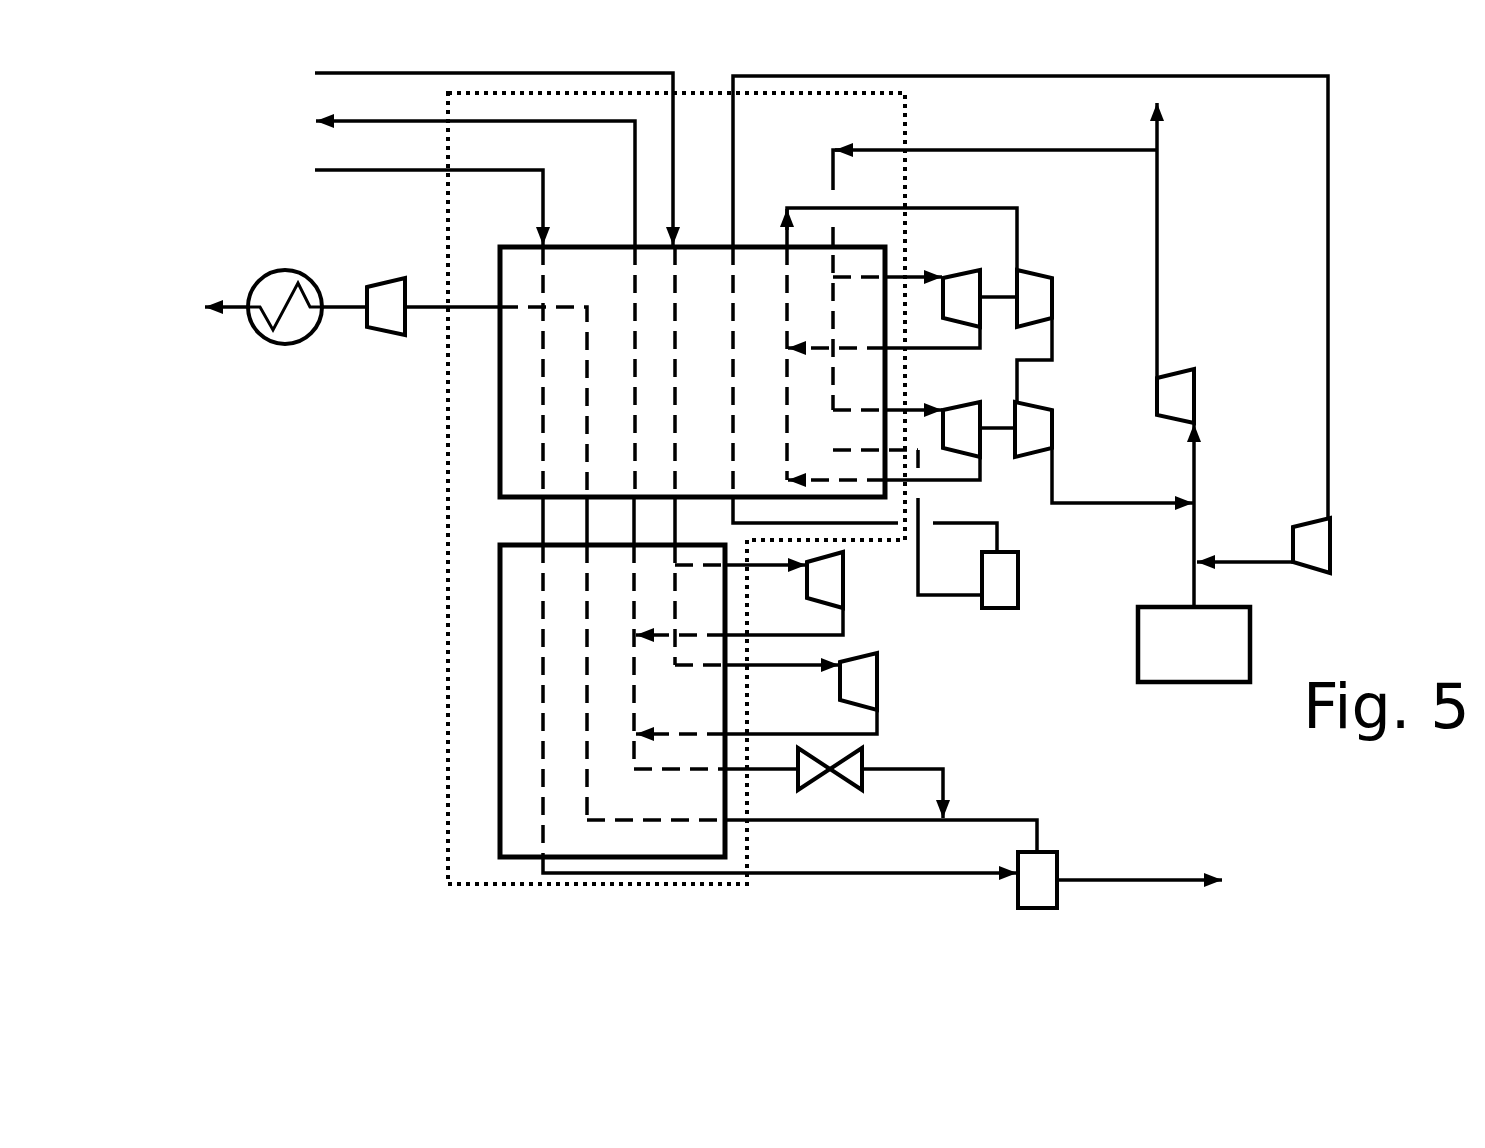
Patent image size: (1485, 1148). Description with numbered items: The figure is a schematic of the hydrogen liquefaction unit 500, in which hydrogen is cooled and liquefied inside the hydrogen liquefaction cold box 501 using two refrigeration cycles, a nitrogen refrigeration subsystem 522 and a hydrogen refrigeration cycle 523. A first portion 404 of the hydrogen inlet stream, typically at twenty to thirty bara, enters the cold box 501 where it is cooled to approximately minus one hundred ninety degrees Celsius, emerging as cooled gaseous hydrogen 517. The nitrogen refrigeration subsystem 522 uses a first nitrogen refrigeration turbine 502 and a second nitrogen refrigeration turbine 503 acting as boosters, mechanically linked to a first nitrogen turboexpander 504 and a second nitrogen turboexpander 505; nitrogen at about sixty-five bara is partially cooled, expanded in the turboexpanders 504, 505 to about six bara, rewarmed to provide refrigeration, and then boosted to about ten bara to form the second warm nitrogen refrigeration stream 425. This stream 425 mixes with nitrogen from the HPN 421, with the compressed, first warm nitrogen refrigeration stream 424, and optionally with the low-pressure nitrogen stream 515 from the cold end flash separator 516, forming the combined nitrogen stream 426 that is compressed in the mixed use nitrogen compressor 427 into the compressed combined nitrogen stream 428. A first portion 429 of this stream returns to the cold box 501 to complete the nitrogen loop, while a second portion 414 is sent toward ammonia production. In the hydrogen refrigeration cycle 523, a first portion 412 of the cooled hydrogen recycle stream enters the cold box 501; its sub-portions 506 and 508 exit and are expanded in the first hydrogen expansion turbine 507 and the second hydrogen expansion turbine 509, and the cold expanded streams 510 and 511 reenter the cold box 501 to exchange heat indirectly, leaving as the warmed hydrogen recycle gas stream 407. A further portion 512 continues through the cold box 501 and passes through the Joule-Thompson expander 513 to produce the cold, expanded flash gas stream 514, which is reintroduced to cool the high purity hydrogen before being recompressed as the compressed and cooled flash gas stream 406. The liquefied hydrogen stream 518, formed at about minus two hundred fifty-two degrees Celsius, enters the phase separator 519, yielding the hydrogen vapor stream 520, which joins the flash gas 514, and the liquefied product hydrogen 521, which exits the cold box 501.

The first portion of hydrogen inlet stream 404 is at (397, 201).
The compressed and cooled flash gas stream 406 is at (320, 307).
The warmed hydrogen recycle gas stream 407 is at (440, 178).
The first portion of cooled hydrogen recycle stream 412 is at (462, 153).
The second portion of compressed combined nitrogen stream 414 is at (1190, 123).
The HPN 421 is at (1194, 644).
The compressed, first warm nitrogen refrigeration stream 424 is at (1263, 545).
The second warm nitrogen refrigeration stream 425 is at (1122, 475).
The combined nitrogen stream 426 is at (1222, 515).
The mixed use nitrogen compressor 427 is at (1205, 396).
The compressed combined nitrogen stream 428 is at (1187, 264).
The first portion of compressed combined nitrogen stream 429 is at (995, 154).
The hydrogen liquefaction unit 500 is at (382, 587).
The hydrogen liquefaction cold box 501 is at (642, 488).
The first nitrogen refrigeration turbine 502 is at (931, 305).
The second nitrogen refrigeration turbine 503 is at (1027, 413).
The first nitrogen turboexpander 504 is at (884, 292).
The second nitrogen turboexpander 505 is at (884, 424).
The first portion of first portion of cooled hydrogen recycle stream 506 is at (740, 581).
The first hydrogen expansion turbine 507 is at (852, 580).
The second portion of first portion of cooled hydrogen recycle stream 508 is at (757, 682).
The second hydrogen expansion turbine 509 is at (888, 681).
The cold expanded first portion of first portion of cooled hydrogen recycle stream 510 is at (739, 621).
The cold expanded second portion of first portion of cooled hydrogen recycle stream 511 is at (756, 722).
The second portion of first portion of cooled hydrogen recycle stream 512 is at (716, 787).
The Joule-Thompson expander 513 is at (830, 782).
The cold, expanded second portion of first portion of cooled hydrogen recycle stream 514 is at (902, 793).
The low-pressure nitrogen stream 515 is at (1063, 299).
The cold end flash separator 516 is at (931, 551).
The cooled gaseous hydrogen 517 is at (533, 522).
The liquefied hydrogen stream 518 is at (780, 881).
The phase separator 519 is at (1038, 898).
The hydrogen vapor stream 520 is at (812, 819).
The liquefied product hydrogen 521 is at (1171, 881).
The nitrogen refrigeration subsystem 522 is at (493, 450).
The hydrogen refrigeration cycle 523 is at (493, 643).